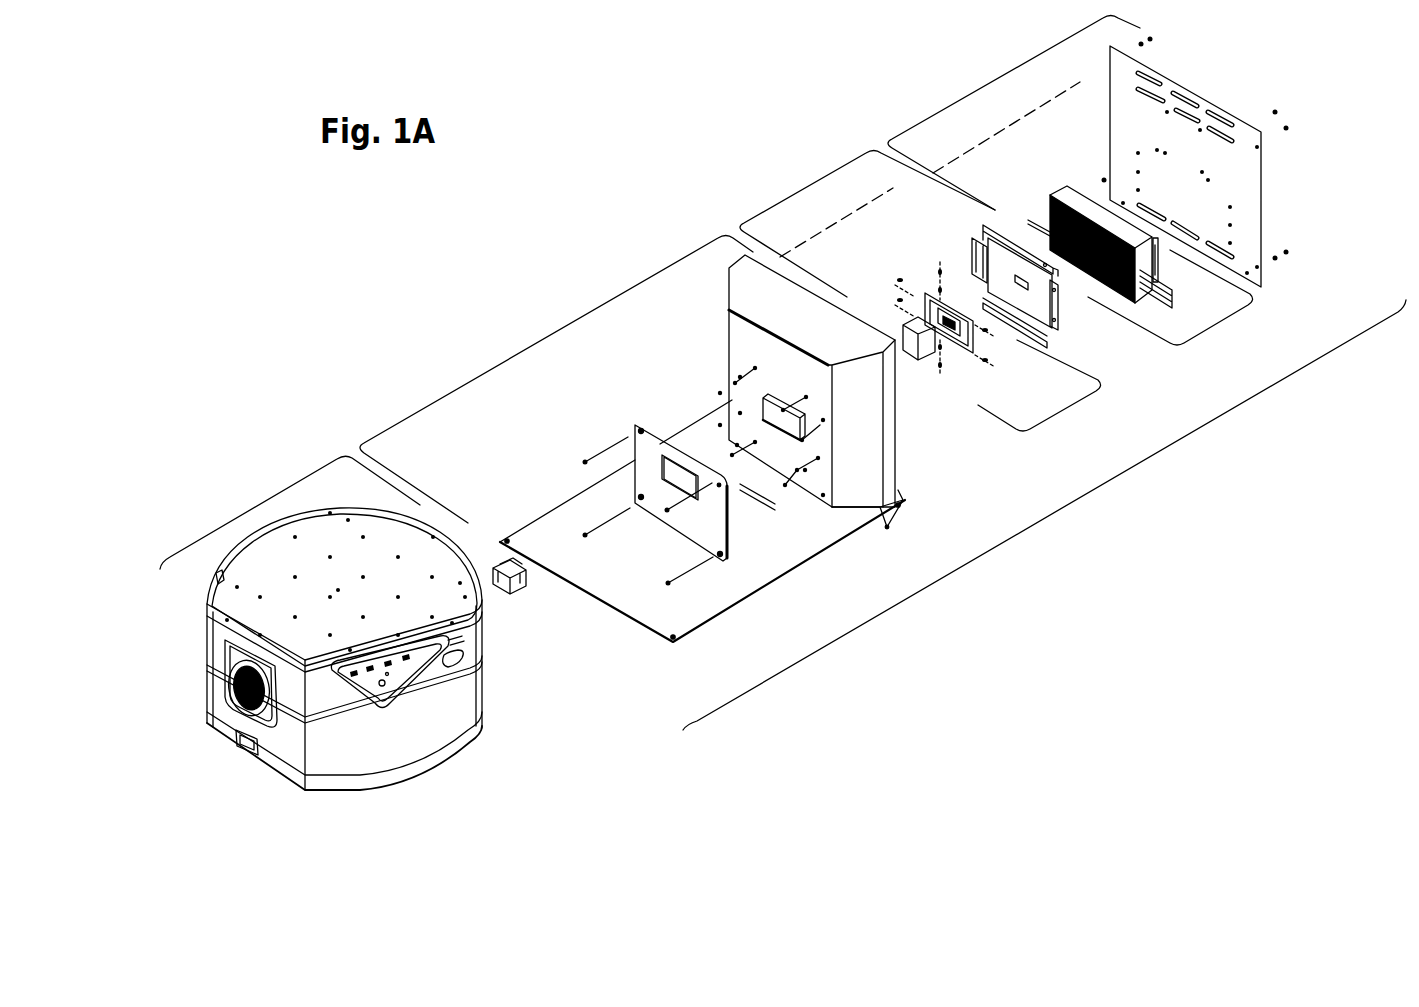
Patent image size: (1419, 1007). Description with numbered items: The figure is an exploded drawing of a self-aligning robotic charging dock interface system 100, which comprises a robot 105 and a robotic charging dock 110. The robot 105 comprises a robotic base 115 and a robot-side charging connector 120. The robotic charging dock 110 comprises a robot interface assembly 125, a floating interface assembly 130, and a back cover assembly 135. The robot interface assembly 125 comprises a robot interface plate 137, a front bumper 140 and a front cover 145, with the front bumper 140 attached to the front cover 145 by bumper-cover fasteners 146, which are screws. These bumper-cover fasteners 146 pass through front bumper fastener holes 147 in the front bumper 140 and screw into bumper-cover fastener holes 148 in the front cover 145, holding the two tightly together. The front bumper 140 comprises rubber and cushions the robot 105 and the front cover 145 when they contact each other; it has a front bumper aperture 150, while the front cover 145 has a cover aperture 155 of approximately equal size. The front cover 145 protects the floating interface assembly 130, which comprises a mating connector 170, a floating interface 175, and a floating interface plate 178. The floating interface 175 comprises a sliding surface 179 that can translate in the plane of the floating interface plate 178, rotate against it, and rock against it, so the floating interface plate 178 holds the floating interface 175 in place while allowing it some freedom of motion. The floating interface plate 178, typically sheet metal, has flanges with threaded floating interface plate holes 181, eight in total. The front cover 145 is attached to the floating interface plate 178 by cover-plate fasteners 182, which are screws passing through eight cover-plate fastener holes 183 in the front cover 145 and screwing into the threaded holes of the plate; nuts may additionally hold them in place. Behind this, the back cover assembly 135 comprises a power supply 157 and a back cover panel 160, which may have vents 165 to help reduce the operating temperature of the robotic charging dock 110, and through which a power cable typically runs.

The self-aligning robotic charging dock interface system 100 is at (957, 664).
The robot 105 is at (270, 500).
The robotic charging dock 110 is at (1052, 510).
The robotic base 115 is at (434, 745).
The robot-side charging connector 120 is at (516, 584).
The robot interface assembly 125 is at (580, 322).
The floating interface assembly 130 is at (816, 184).
The back cover assembly 135 is at (992, 86).
The base plate 137 is at (631, 586).
The front bumper 140 is at (718, 528).
The front cover 145 is at (815, 329).
The bumper-cover fasteners 146 is at (582, 462).
The front bumper fastener holes 147 is at (638, 428).
The bumper-cover fastener holes 148 is at (740, 377).
The front bumper aperture 150 is at (660, 470).
The cover aperture 155 is at (777, 500).
The power supply 157 is at (1252, 296).
The back cover panel 160 is at (1193, 196).
The vents 165 is at (1150, 76).
The mating connector 170 is at (928, 355).
The floating interface 175 is at (1080, 410).
The floating interface plate 178 is at (1164, 362).
The sliding surface 179 is at (1032, 303).
The floating interface plate holes 181 is at (1043, 262).
The cover-plate fasteners 182 is at (735, 383).
The cover-plate fastener holes 183 is at (755, 368).